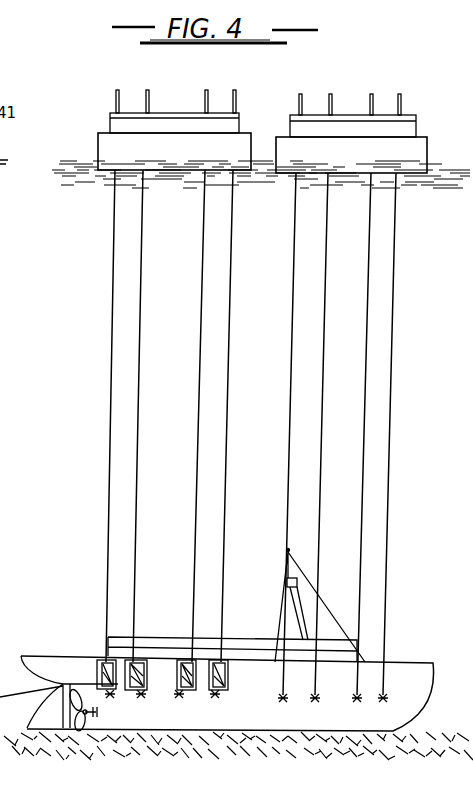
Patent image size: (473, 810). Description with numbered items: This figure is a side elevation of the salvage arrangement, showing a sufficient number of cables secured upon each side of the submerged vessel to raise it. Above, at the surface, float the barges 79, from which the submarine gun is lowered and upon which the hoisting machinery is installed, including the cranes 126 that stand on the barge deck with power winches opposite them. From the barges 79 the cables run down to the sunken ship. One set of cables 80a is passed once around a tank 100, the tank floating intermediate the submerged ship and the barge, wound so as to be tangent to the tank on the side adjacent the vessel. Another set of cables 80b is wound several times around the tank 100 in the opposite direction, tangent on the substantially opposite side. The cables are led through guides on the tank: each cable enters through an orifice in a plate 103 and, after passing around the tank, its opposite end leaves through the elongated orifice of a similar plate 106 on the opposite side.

The barge 79 is at (115, 128).
The cranes 126 is at (234, 90).
The cables 80a is at (108, 499).
The cables 80b is at (196, 502).
The tank 100 is at (163, 637).
The plate 103 is at (98, 658).
The plate 106 is at (178, 690).